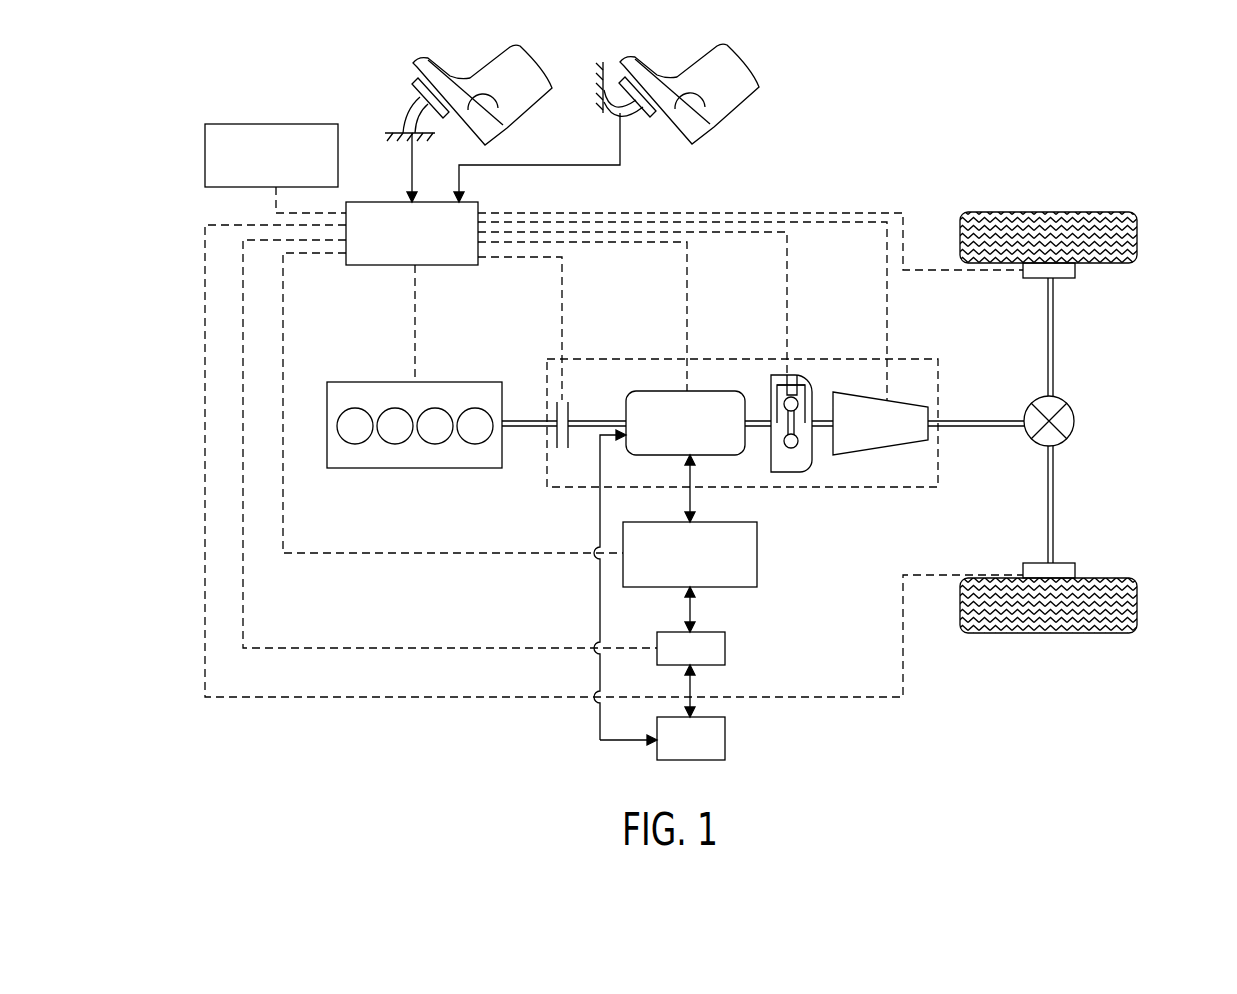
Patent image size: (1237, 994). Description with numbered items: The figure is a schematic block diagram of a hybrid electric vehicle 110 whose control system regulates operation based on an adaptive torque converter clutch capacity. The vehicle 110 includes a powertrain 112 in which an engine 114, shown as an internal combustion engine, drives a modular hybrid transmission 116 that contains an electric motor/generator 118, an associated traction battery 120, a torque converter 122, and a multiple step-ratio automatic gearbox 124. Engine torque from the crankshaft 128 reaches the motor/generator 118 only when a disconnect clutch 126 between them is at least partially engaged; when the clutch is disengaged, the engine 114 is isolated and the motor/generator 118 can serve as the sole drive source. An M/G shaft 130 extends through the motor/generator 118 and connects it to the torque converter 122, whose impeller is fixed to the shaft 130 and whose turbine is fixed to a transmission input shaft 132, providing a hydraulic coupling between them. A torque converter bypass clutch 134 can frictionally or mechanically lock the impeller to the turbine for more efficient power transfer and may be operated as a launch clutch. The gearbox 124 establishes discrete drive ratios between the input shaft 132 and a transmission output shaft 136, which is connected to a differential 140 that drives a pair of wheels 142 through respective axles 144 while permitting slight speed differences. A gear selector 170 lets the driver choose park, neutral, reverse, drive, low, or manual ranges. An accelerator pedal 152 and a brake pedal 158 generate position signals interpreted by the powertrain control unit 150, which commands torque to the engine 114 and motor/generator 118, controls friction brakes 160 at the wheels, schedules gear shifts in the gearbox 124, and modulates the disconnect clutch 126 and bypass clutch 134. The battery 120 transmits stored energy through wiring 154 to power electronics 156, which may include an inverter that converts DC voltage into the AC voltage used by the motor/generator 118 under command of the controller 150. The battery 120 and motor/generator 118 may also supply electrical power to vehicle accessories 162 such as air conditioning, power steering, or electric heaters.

The hybrid electric vehicle 110 is at (918, 145).
The powertrain 112 is at (518, 571).
The engine 114 is at (380, 382).
The transmission 116 is at (727, 359).
The electric motor/generator 118 is at (668, 391).
The traction battery 120 is at (725, 648).
The torque converter 122 is at (792, 472).
The gearbox 124 is at (868, 455).
The disconnect clutch 126 is at (557, 448).
The crankshaft 128 is at (530, 419).
The M/G shaft 130 is at (600, 419).
The transmission input shaft 132 is at (818, 419).
The torque converter bypass clutch 134 is at (795, 375).
The transmission output shaft 136 is at (977, 419).
The differential 140 is at (1074, 418).
The wheels 142 is at (1050, 212).
The axles 144 is at (1054, 340).
The powertrain control unit 150 is at (377, 202).
The accelerator pedal 152 is at (418, 88).
The wiring 154 is at (685, 610).
The power electronics 156 is at (757, 560).
The brake pedal 158 is at (647, 128).
The friction brakes 160 is at (1075, 270).
The vehicle accessories 162 is at (725, 737).
The gear selector 170 is at (283, 124).